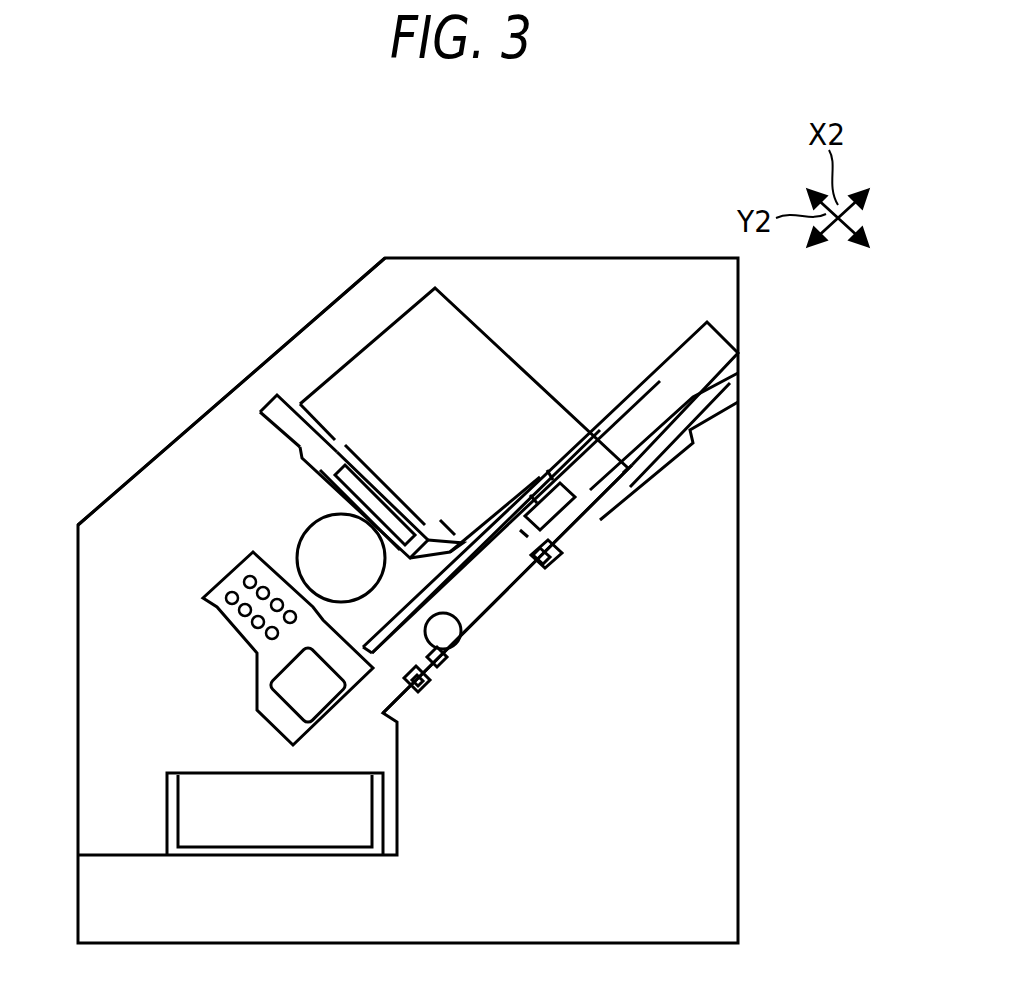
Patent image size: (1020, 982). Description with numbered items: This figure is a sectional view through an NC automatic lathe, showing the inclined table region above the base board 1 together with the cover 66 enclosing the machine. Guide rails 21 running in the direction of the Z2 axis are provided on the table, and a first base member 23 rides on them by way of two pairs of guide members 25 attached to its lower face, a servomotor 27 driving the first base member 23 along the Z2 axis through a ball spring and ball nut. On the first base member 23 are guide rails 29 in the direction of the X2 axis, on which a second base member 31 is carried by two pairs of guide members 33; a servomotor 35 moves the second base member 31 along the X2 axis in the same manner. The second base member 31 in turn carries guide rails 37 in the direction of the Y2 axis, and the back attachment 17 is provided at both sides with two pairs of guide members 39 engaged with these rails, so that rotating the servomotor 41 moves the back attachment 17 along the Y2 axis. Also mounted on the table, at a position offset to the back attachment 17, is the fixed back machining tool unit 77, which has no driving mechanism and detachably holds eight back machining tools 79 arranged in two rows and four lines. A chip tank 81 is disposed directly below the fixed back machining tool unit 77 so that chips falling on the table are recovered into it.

The base board 1 is at (738, 782).
The cover 66 is at (148, 463).
The back attachment 17 is at (302, 548).
The guide rails in the direction of the Z2 axis 21 is at (556, 553).
The first base member 23 is at (478, 583).
The guide members in the direction of the Z2 axis 25 is at (558, 545).
The servomotor 27 is at (455, 640).
The guide rails in the direction of the X2 axis 29 is at (548, 498).
The second base member 31 is at (568, 428).
The guide members in the direction of the X2 axis 33 is at (600, 456).
The servomotor 35 is at (715, 343).
The guide rails in the direction of the Y2 axis 37 is at (378, 490).
The guide members in the direction of the Y2 axis 39 is at (337, 460).
The servomotor 41 is at (279, 398).
The fixed back machining tool unit 77 is at (246, 640).
The back machining tools 79 is at (218, 607).
The chip tank 81 is at (167, 812).